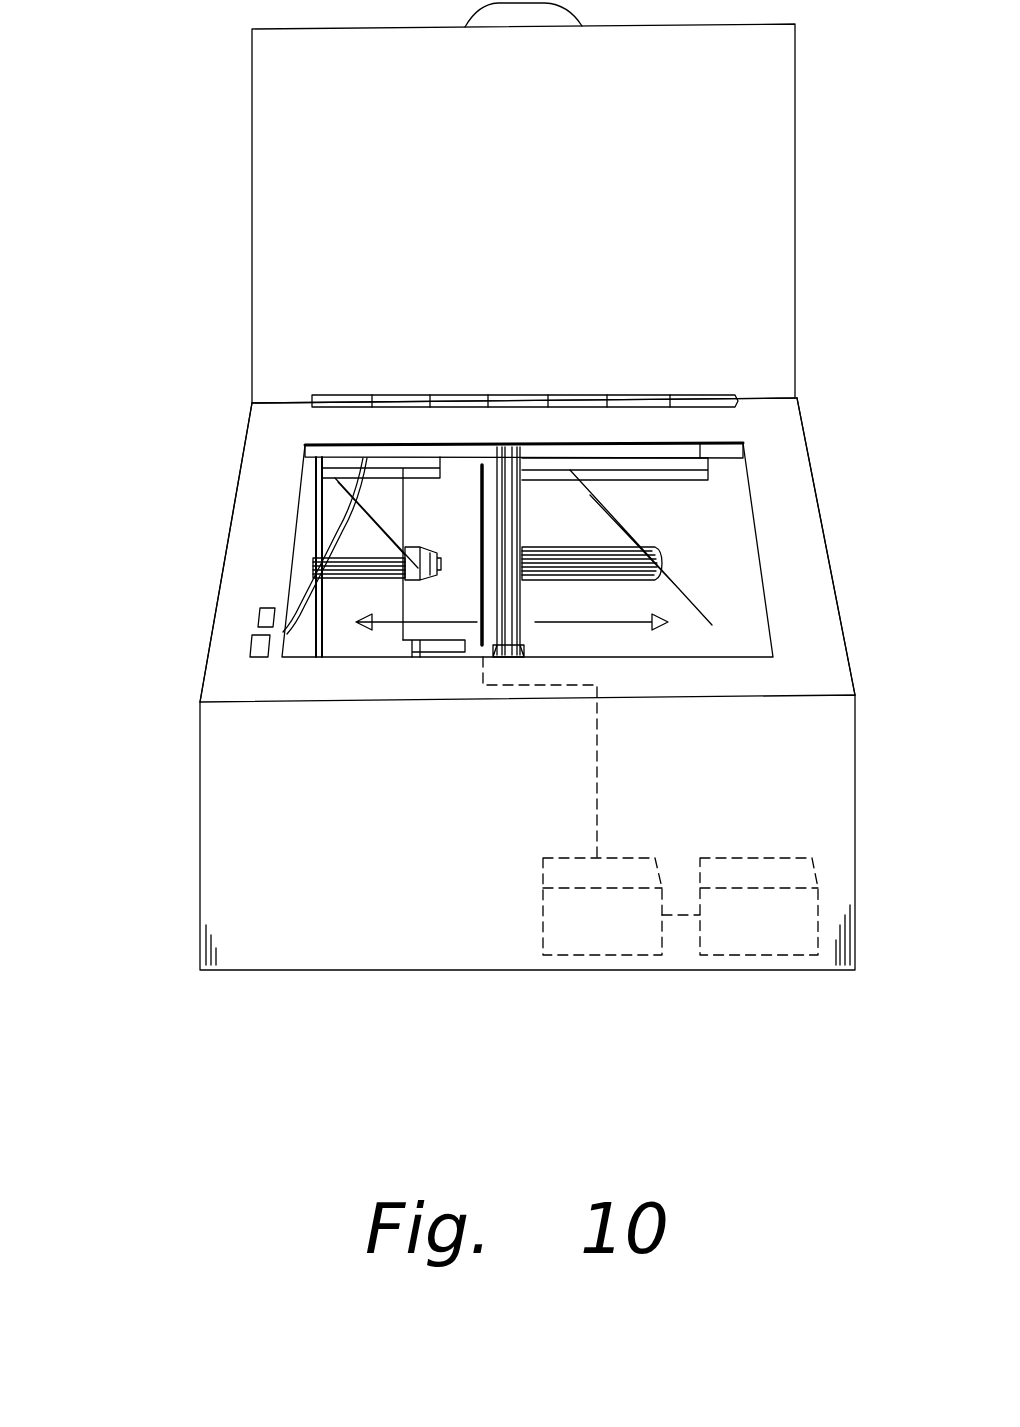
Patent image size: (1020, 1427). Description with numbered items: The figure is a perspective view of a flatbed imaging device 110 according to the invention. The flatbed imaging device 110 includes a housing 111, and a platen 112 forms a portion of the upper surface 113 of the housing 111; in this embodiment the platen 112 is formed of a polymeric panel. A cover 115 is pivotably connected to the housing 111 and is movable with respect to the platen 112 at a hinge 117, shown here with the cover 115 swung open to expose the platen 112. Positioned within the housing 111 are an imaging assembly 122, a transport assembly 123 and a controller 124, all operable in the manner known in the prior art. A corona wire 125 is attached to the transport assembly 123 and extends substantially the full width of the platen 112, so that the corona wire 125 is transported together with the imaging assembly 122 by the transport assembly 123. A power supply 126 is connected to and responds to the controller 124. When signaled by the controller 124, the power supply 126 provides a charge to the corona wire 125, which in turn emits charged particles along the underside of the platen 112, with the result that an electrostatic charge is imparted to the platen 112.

The flatbed imaging device 110 is at (90, 300).
The housing 111 is at (842, 803).
The platen 112 is at (740, 645).
The upper surface 113 is at (795, 446).
The cover 115 is at (780, 202).
The hinge 117 is at (350, 404).
The imaging assembly 122 is at (440, 547).
The transport assembly 123 is at (645, 462).
The controller 124 is at (770, 948).
The corona wire 125 is at (483, 577).
The power supply 126 is at (613, 948).